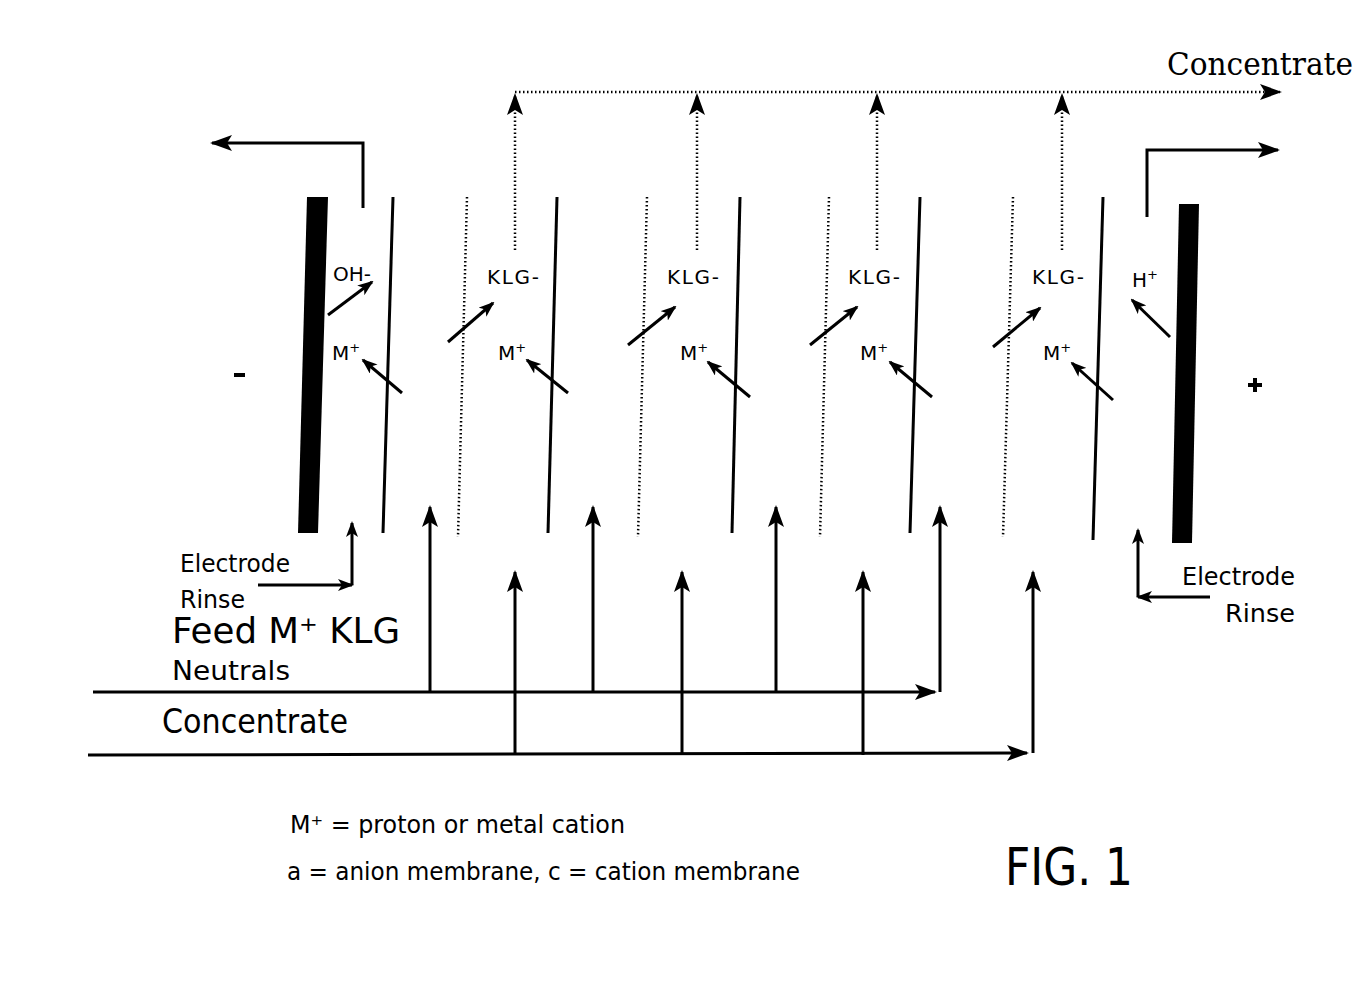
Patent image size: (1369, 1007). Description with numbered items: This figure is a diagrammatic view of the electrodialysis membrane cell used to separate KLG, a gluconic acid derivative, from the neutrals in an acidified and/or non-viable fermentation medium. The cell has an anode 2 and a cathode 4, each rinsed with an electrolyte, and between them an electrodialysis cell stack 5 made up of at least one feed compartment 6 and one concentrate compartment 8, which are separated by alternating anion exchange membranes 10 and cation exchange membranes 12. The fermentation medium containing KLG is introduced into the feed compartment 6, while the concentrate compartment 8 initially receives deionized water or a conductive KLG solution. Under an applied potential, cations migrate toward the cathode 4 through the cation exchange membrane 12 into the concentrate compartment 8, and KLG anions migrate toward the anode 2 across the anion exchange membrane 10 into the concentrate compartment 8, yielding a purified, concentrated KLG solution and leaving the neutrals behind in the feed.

The anode 2 is at (1207, 297).
The cathode 4 is at (300, 293).
The electrodialysis cell stack 5 is at (400, 108).
The feed compartment 6 is at (598, 564).
The concentrate compartment 8 is at (680, 595).
The anion exchange membrane 10 is at (640, 280).
The cation exchange membrane 12 is at (745, 278).